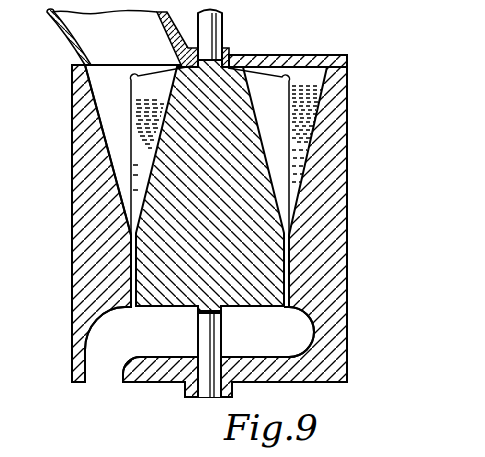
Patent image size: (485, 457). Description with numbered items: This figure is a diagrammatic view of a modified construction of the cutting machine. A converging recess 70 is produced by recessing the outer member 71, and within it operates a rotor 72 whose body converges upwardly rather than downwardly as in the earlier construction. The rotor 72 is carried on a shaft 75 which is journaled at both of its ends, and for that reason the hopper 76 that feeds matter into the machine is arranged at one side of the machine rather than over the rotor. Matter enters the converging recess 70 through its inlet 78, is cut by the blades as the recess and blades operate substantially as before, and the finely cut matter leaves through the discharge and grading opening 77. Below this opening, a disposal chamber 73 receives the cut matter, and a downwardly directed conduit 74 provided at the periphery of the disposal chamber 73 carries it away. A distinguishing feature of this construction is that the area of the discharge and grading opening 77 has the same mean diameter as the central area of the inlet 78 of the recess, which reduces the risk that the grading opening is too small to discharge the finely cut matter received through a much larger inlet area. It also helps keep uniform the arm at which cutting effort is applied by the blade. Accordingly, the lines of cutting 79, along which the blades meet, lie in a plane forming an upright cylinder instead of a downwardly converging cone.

The converging recess 70 is at (108, 118).
The outer member 71 is at (95, 228).
The rotor 72 is at (232, 92).
The disposal chamber 73 is at (305, 338).
The conduit 74 is at (108, 364).
The shaft 75 is at (215, 30).
The hopper 76 is at (67, 38).
The discharge and grading opening 77 is at (292, 238).
The inlet 78 is at (296, 70).
The lines of cutting 79 is at (128, 146).